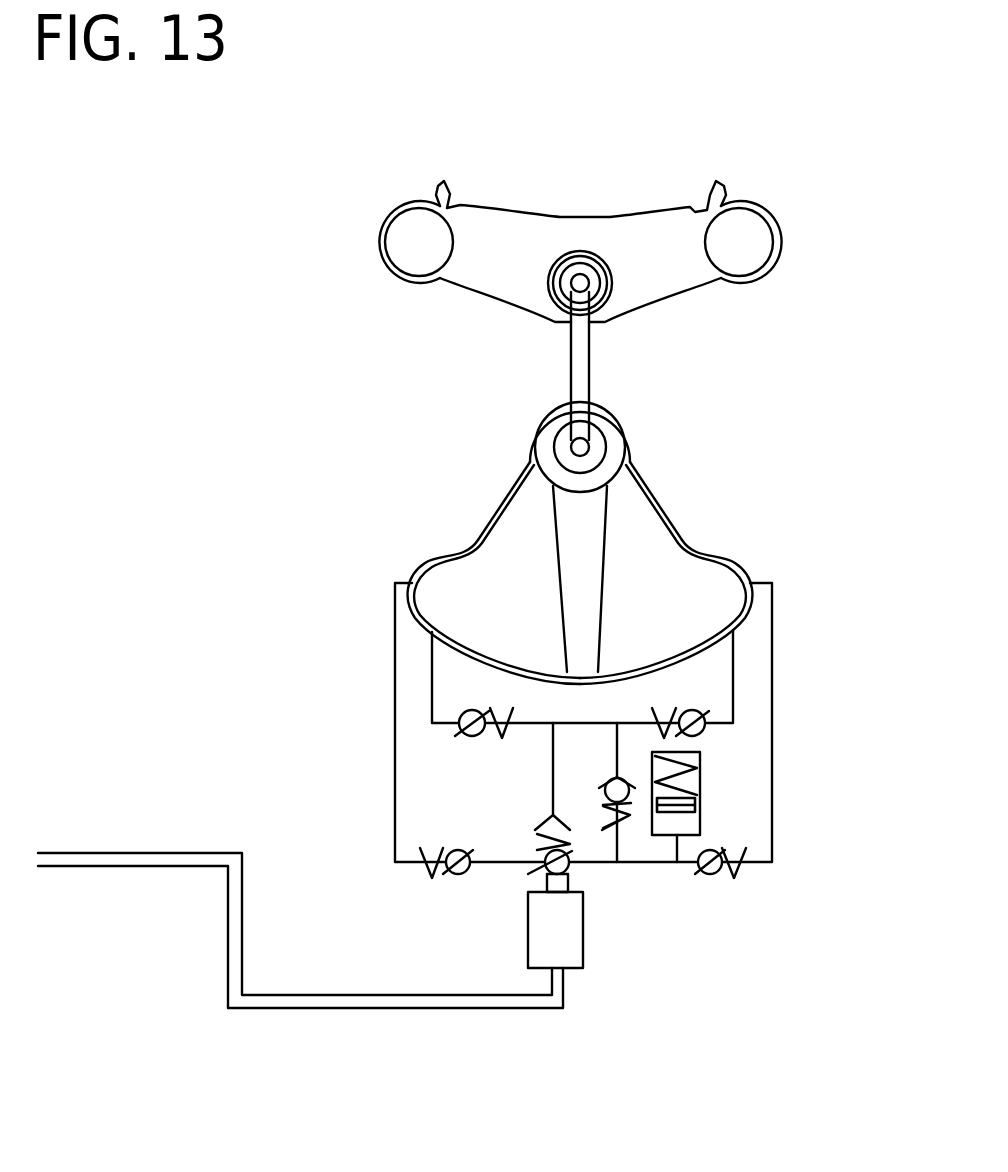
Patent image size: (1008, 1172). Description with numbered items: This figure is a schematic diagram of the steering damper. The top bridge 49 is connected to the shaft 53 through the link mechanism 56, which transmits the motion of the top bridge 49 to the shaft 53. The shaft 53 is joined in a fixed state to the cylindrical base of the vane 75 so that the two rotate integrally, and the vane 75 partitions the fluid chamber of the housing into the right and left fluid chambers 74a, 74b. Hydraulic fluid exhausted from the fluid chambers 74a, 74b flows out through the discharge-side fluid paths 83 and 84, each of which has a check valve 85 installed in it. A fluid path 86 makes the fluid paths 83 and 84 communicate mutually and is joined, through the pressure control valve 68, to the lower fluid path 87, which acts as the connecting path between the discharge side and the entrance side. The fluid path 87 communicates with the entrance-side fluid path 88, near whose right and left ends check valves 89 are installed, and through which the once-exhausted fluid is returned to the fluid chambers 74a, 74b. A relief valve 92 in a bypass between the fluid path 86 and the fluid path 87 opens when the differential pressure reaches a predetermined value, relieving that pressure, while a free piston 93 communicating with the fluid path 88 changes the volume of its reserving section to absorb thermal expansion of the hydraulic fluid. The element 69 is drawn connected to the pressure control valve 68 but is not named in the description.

The top bridge 49 is at (517, 235).
The link mechanism 56 is at (578, 360).
The shaft 53 is at (560, 440).
The left fluid chamber 74a is at (475, 578).
The right fluid chamber 74b is at (658, 547).
The vane 75 is at (605, 600).
The fluid path 83 is at (432, 672).
The fluid path 84 is at (733, 665).
The check valve 85 is at (465, 730).
The fluid path 86 is at (585, 727).
The fluid path 87 is at (500, 858).
The fluid path 88 is at (395, 822).
The check valve 89 is at (450, 875).
The pressure control valve 68 is at (548, 874).
The motor 69 is at (573, 948).
The relief valve 92 is at (630, 795).
The free piston 93 is at (700, 785).